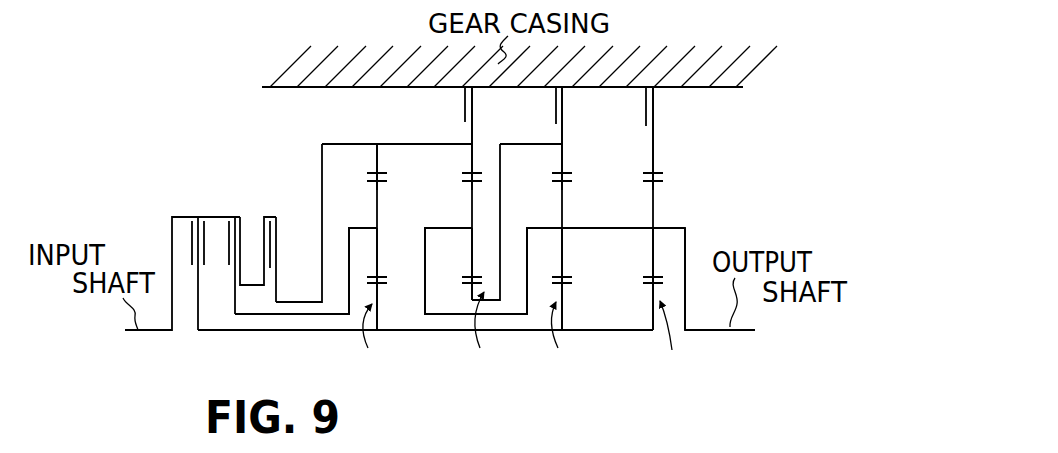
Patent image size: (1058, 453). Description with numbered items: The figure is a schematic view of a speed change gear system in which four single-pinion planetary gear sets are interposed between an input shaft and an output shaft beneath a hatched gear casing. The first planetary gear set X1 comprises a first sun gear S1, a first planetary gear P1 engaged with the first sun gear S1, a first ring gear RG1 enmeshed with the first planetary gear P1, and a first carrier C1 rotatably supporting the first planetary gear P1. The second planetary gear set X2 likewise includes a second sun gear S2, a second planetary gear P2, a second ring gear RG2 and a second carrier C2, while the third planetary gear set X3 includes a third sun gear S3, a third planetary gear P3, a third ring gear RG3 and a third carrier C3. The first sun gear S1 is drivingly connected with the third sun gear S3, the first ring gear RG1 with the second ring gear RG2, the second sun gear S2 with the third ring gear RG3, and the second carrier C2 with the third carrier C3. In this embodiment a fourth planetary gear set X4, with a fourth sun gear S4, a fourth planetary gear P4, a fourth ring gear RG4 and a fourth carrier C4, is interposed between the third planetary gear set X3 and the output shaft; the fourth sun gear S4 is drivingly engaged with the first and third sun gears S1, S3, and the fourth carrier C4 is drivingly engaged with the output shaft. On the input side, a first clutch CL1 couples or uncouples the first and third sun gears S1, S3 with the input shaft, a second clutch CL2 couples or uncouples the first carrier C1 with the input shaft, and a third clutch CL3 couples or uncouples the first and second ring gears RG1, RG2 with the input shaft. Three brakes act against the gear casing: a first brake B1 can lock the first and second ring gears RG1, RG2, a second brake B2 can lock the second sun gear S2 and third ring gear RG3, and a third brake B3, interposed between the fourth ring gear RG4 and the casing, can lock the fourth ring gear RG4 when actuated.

The first clutch CL1 is at (203, 219).
The second clutch CL2 is at (244, 221).
The third clutch CL3 is at (284, 221).
The first brake B1 is at (474, 106).
The second brake B2 is at (564, 106).
The third brake B3 is at (655, 106).
The first ring gear RG1 is at (379, 161).
The second ring gear RG2 is at (472, 165).
The third ring gear RG3 is at (564, 161).
The fourth ring gear RG4 is at (655, 161).
The first carrier C1 is at (380, 228).
The second carrier C2 is at (474, 228).
The third carrier C3 is at (566, 228).
The fourth carrier C4 is at (660, 228).
The first planetary gear P1 is at (379, 255).
The second planetary gear P2 is at (470, 249).
The third planetary gear P3 is at (564, 255).
The fourth planetary gear P4 is at (652, 241).
The first sun gear S1 is at (379, 300).
The second sun gear S2 is at (470, 295).
The third sun gear S3 is at (564, 300).
The fourth sun gear S4 is at (652, 294).
The first planetary gear set X1 is at (366, 347).
The second planetary gear set X2 is at (481, 341).
The third planetary gear set X3 is at (559, 346).
The fourth planetary gear set X4 is at (671, 346).